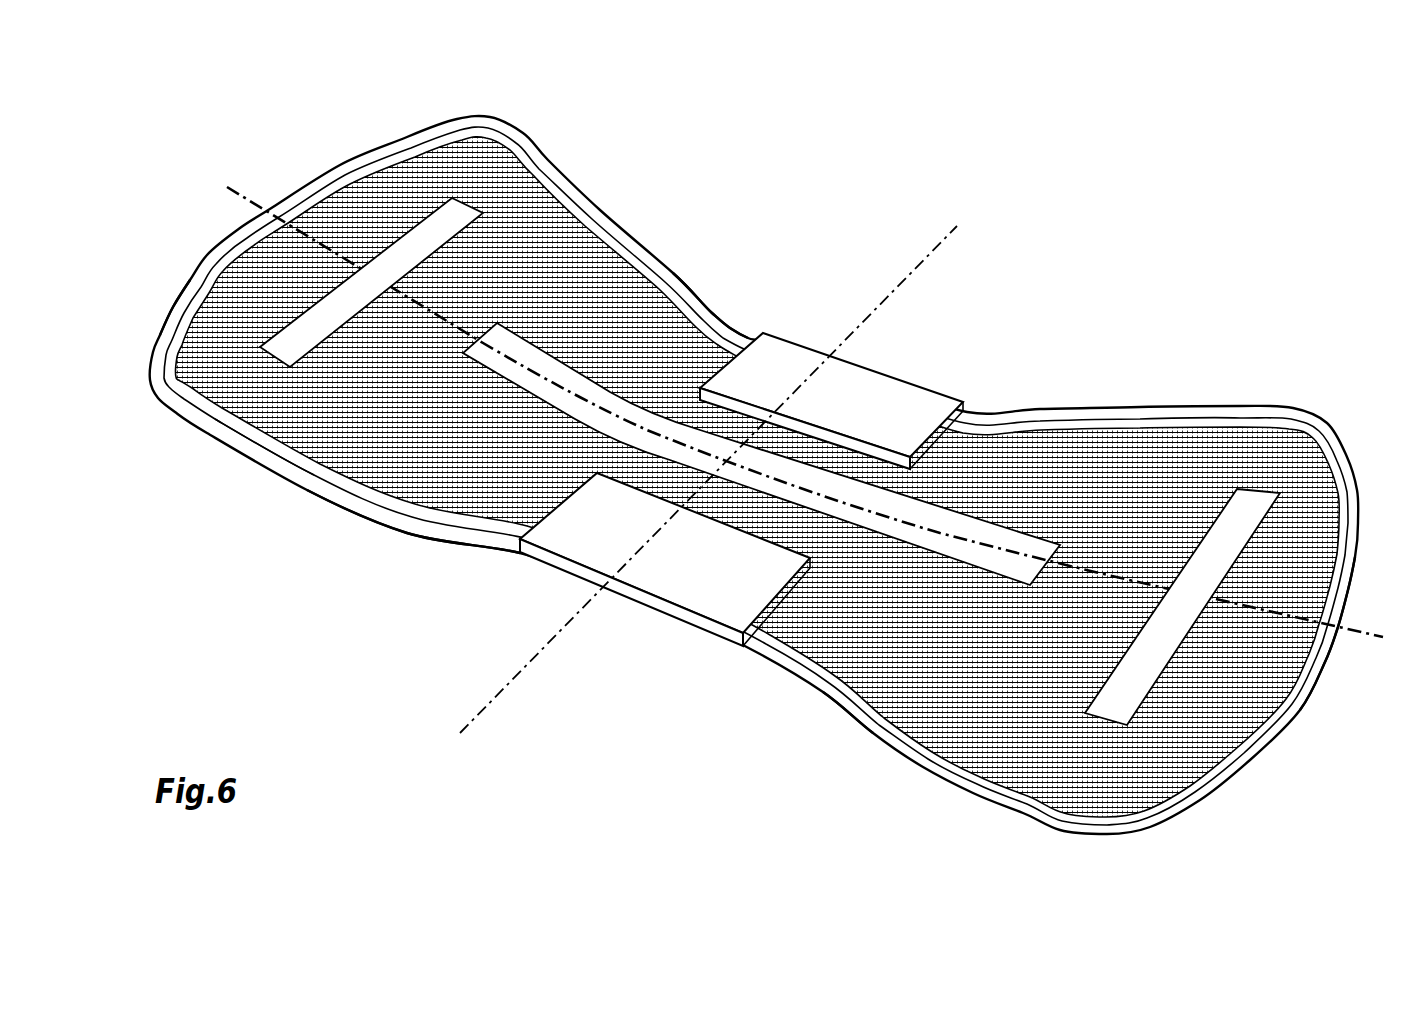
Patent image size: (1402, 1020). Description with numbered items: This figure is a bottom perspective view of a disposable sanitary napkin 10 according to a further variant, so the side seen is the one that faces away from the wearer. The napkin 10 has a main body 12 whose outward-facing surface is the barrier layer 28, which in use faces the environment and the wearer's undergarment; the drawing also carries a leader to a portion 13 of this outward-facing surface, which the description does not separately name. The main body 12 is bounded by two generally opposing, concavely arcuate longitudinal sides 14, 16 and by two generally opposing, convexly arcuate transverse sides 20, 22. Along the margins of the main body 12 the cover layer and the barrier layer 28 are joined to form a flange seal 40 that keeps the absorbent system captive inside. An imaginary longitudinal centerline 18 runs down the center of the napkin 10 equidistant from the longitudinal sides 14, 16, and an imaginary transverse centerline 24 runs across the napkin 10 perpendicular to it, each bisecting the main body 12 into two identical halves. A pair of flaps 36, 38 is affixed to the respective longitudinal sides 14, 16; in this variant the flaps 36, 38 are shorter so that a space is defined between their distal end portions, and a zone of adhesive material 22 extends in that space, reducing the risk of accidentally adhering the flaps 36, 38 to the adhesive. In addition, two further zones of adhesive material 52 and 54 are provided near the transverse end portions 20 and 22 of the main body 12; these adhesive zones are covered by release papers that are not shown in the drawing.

The sanitary napkin 10 is at (1058, 191).
The main body 12 is at (538, 203).
The backsheet 13 is at (983, 732).
The longitudinal side 14 is at (417, 530).
The longitudinal side 16 is at (720, 318).
The longitudinal centerline 18 is at (241, 188).
The transverse side 20 is at (202, 256).
The transverse side / zone of adhesive material 22 is at (850, 523).
The transverse centerline 24 is at (480, 705).
The barrier layer 28 is at (1273, 443).
The flap 36 is at (727, 573).
The flap 38 is at (848, 415).
The flange seal 40 is at (290, 470).
The zone of adhesive material 52 is at (297, 337).
The zone of adhesive material 54 is at (1143, 670).